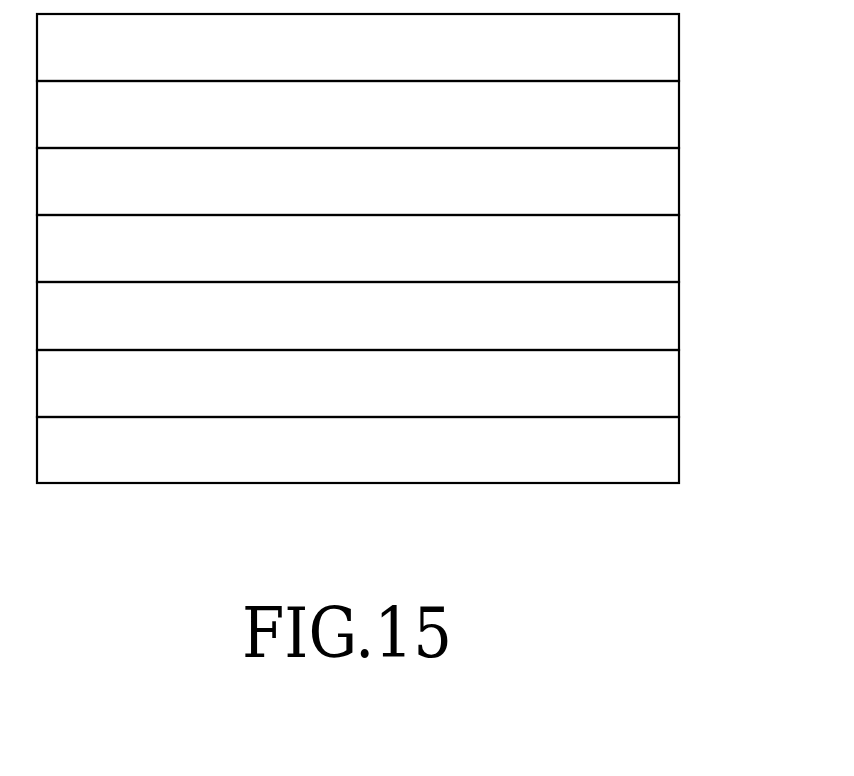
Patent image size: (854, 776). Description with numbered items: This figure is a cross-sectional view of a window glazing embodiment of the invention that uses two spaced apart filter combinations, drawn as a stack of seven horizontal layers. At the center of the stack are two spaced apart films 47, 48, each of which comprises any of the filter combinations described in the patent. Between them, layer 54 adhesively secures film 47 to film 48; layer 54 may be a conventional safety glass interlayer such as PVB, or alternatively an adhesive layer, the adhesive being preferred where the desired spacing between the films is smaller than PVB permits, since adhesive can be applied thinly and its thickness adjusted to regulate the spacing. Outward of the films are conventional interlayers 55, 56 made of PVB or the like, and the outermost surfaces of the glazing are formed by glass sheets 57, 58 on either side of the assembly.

The glass sheet 57 is at (665, 55).
The interlayer 55 is at (665, 122).
The film 47 is at (665, 189).
The layer 54 is at (665, 256).
The film 48 is at (665, 323).
The interlayer 56 is at (665, 390).
The glass sheet 58 is at (665, 456).